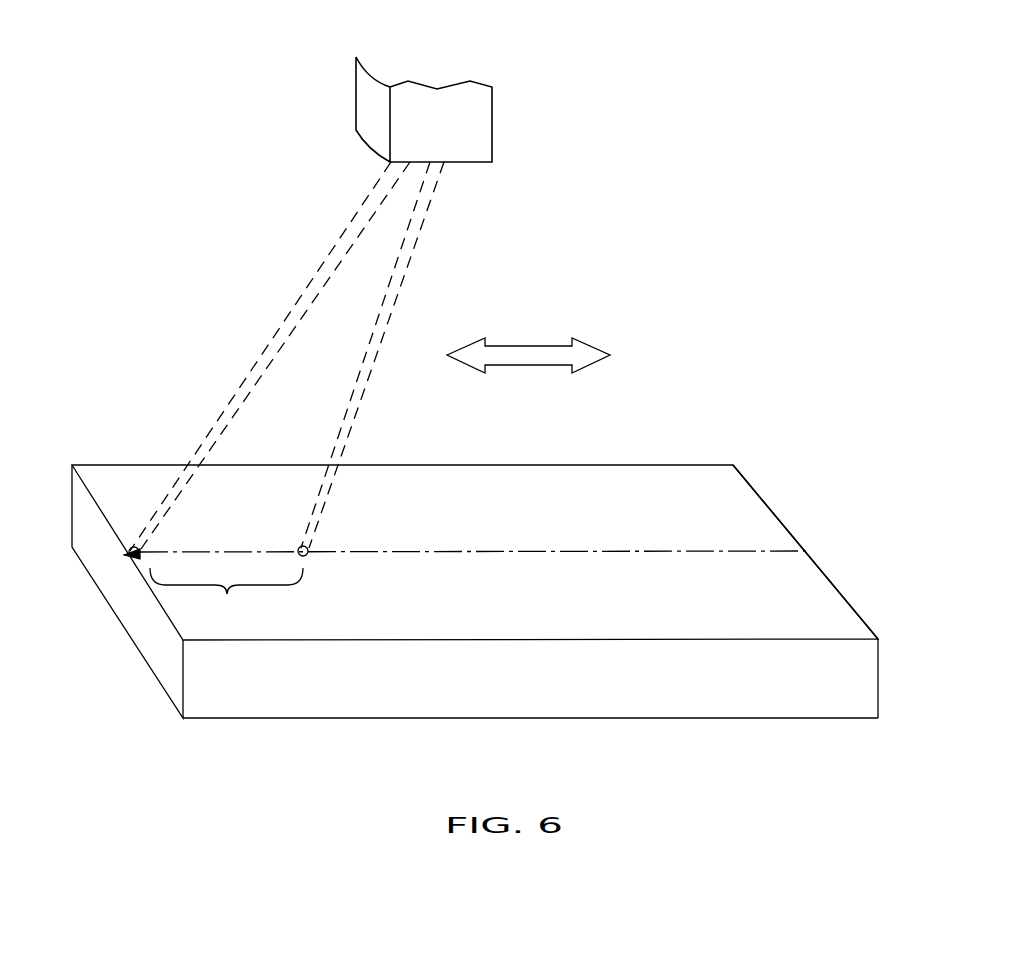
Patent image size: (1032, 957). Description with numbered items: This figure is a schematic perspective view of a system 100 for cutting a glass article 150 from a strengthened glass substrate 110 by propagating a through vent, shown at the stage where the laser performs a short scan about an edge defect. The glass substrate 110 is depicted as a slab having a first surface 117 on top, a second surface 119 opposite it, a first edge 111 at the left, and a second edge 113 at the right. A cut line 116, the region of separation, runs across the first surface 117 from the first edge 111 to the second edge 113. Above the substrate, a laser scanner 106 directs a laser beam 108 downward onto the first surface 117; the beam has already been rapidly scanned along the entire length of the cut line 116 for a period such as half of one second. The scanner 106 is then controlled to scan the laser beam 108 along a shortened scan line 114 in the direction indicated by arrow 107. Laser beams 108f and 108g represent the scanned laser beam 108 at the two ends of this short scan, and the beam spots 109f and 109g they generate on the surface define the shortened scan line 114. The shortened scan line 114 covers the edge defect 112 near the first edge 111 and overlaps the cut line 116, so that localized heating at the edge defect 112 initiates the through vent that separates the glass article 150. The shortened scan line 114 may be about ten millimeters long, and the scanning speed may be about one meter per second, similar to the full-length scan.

The system 100 is at (715, 287).
The laser scanner 106 is at (492, 129).
The arrow 107 is at (530, 346).
The laser beam 108 is at (287, 356).
The laser beam 108f is at (245, 365).
The laser beam 108g is at (350, 397).
The beam spot 109f is at (130, 560).
The beam spot 109g is at (298, 548).
The glass substrate 110 is at (479, 619).
The first edge 111 is at (142, 625).
The edge defect 112 is at (132, 548).
The second edge 113 is at (865, 622).
The shortened scan line 114 is at (226, 598).
The cut line 116 is at (700, 551).
The first surface 117 is at (771, 622).
The second surface 119 is at (680, 719).
The glass article 150 is at (780, 562).